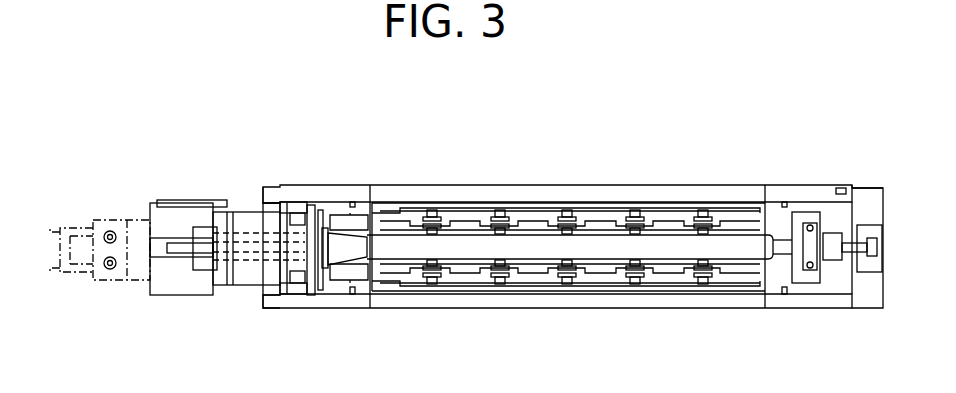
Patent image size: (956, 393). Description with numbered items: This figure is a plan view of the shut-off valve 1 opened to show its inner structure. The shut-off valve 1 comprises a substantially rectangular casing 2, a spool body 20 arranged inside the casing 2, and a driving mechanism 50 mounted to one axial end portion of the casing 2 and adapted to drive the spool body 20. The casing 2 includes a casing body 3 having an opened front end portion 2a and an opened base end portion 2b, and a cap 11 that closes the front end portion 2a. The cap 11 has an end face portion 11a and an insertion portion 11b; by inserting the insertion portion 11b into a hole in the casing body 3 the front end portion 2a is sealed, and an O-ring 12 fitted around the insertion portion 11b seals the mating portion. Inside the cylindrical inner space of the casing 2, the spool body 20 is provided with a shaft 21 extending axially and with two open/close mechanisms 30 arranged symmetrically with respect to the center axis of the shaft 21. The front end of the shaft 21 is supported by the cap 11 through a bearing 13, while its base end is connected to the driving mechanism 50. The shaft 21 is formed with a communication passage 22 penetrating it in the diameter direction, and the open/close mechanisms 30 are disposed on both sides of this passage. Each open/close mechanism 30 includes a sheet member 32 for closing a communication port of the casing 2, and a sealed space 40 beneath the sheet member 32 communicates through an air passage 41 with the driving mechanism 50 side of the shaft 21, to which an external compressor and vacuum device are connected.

The shut-off valve 1 is at (560, 89).
The casing 2 is at (438, 180).
The front end portion 2a is at (840, 160).
The base end portion 2b is at (287, 178).
The casing body 3 is at (655, 198).
The cap 11 is at (865, 176).
The end face portion 11a is at (863, 310).
The insertion portion 11b is at (823, 275).
The O-ring 12 is at (835, 188).
The bearing 13 is at (810, 272).
The spool body 20 is at (593, 300).
The shaft 21 is at (400, 291).
The communication passage 22 is at (605, 255).
The open/close mechanism 30 is at (604, 198).
The sheet member 32 is at (540, 198).
The sealed space 40 is at (386, 190).
The air passage 41 is at (330, 186).
The driving mechanism 50 is at (210, 185).